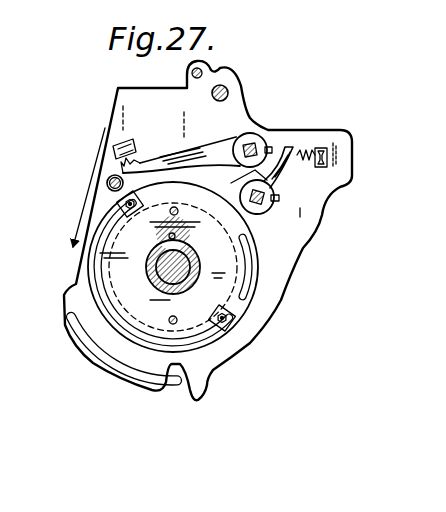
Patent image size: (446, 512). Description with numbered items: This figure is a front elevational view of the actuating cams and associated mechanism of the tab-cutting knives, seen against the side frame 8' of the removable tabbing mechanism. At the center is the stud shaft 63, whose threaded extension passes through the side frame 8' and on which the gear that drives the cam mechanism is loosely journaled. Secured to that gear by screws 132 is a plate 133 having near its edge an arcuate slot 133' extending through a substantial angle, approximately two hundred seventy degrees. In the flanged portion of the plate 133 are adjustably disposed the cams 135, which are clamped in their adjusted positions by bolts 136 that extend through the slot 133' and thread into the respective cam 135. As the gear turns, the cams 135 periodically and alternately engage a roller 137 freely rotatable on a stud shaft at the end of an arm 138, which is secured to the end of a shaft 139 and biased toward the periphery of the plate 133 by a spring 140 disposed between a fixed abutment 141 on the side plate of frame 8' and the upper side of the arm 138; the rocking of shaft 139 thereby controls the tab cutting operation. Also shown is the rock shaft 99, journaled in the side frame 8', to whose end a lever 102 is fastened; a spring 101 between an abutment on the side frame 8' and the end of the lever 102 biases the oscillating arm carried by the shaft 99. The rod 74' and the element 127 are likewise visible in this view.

The side frame 8' is at (201, 230).
The pivot bolt 74' is at (235, 80).
The arm 138 is at (173, 155).
The shaft 139 is at (257, 137).
The lever 102 is at (283, 143).
The spring 101 is at (310, 143).
The fixed abutment 141 is at (118, 146).
The spring 140 is at (122, 154).
The roller 137 is at (106, 183).
The cam 135 is at (124, 203).
The bolt 136 is at (120, 207).
The rock shaft 99 is at (270, 206).
The stud shaft 63 is at (155, 268).
The arcuate slot 133' is at (221, 267).
The plate 133 is at (220, 267).
The screw 132 is at (168, 321).
The arcuate slot 127 is at (128, 368).